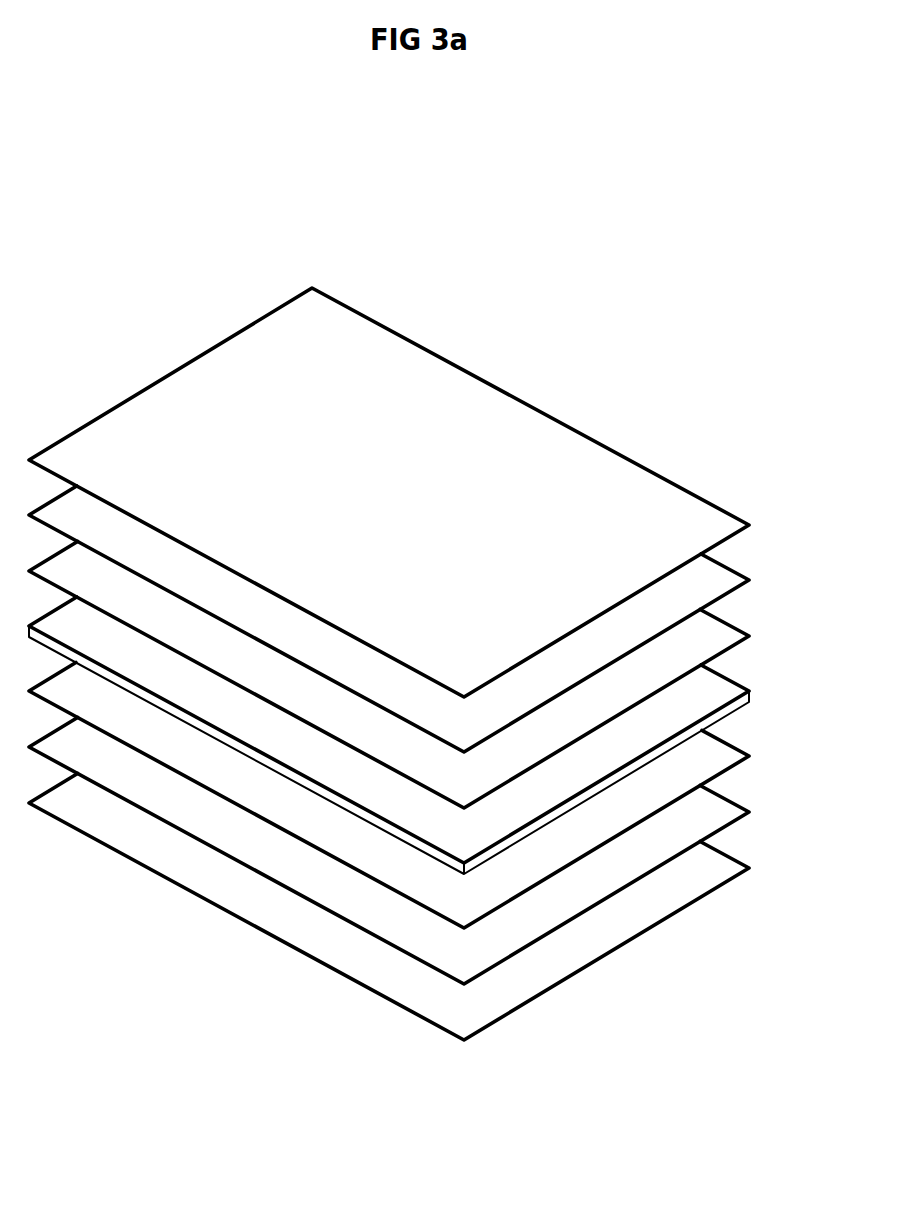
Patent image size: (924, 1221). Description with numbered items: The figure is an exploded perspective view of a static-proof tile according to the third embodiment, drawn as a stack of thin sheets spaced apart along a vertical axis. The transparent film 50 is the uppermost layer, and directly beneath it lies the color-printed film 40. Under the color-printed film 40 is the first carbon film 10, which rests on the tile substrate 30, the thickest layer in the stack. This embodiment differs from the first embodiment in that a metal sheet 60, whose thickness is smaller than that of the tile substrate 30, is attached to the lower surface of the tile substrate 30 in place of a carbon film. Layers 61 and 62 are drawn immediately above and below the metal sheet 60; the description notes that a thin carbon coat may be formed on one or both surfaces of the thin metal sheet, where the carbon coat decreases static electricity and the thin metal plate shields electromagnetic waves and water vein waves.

The transparent film 50 is at (672, 490).
The color-printed film 40 is at (749, 580).
The first carbon film 10 is at (749, 636).
The tile substrate 30 is at (749, 691).
The lower electrode sheet 61 is at (749, 756).
The metal sheet 60 is at (749, 812).
The base sheet 62 is at (749, 868).